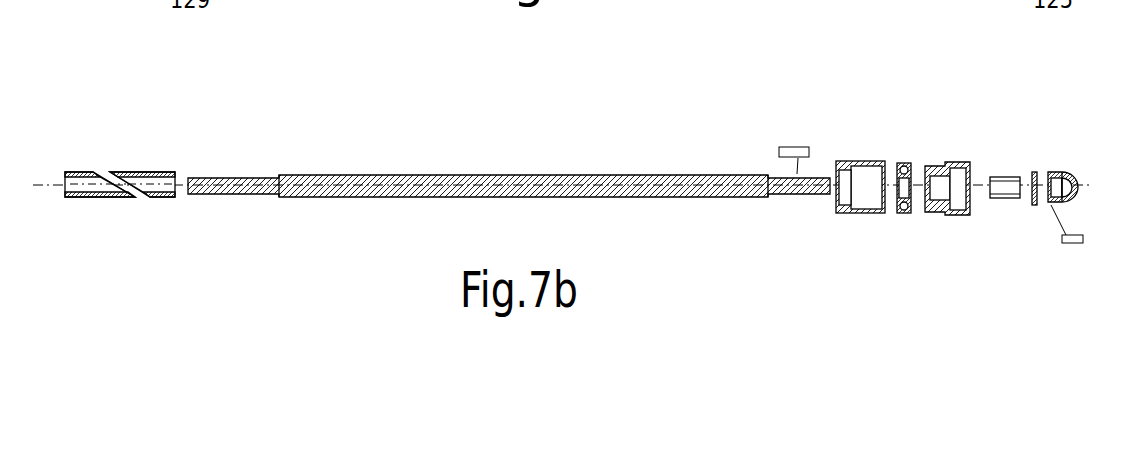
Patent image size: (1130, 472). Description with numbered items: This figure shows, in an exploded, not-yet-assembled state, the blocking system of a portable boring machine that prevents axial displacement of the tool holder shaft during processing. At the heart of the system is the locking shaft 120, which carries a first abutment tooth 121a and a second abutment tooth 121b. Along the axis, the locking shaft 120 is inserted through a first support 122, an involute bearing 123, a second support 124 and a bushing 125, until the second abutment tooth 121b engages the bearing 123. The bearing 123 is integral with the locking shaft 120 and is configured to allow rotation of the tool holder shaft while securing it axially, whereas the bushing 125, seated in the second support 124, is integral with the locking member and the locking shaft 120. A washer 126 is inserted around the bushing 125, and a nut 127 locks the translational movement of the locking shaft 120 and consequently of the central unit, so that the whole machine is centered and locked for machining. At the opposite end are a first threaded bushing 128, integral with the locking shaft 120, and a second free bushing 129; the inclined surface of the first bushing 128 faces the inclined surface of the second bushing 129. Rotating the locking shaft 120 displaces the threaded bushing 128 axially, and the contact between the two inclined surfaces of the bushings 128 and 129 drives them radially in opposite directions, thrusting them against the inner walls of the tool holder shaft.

The locking shaft 120 is at (509, 169).
The first abutment tooth 121a is at (277, 199).
The second abutment tooth 121b is at (768, 199).
The first support 122 is at (862, 156).
The involute bearing 123 is at (900, 164).
The second support 124 is at (949, 158).
The bushing 125 is at (993, 176).
The washer 126 is at (1034, 207).
The nut 127 is at (1069, 167).
The first threaded bushing 128 is at (88, 199).
The second free bushing 129 is at (146, 171).